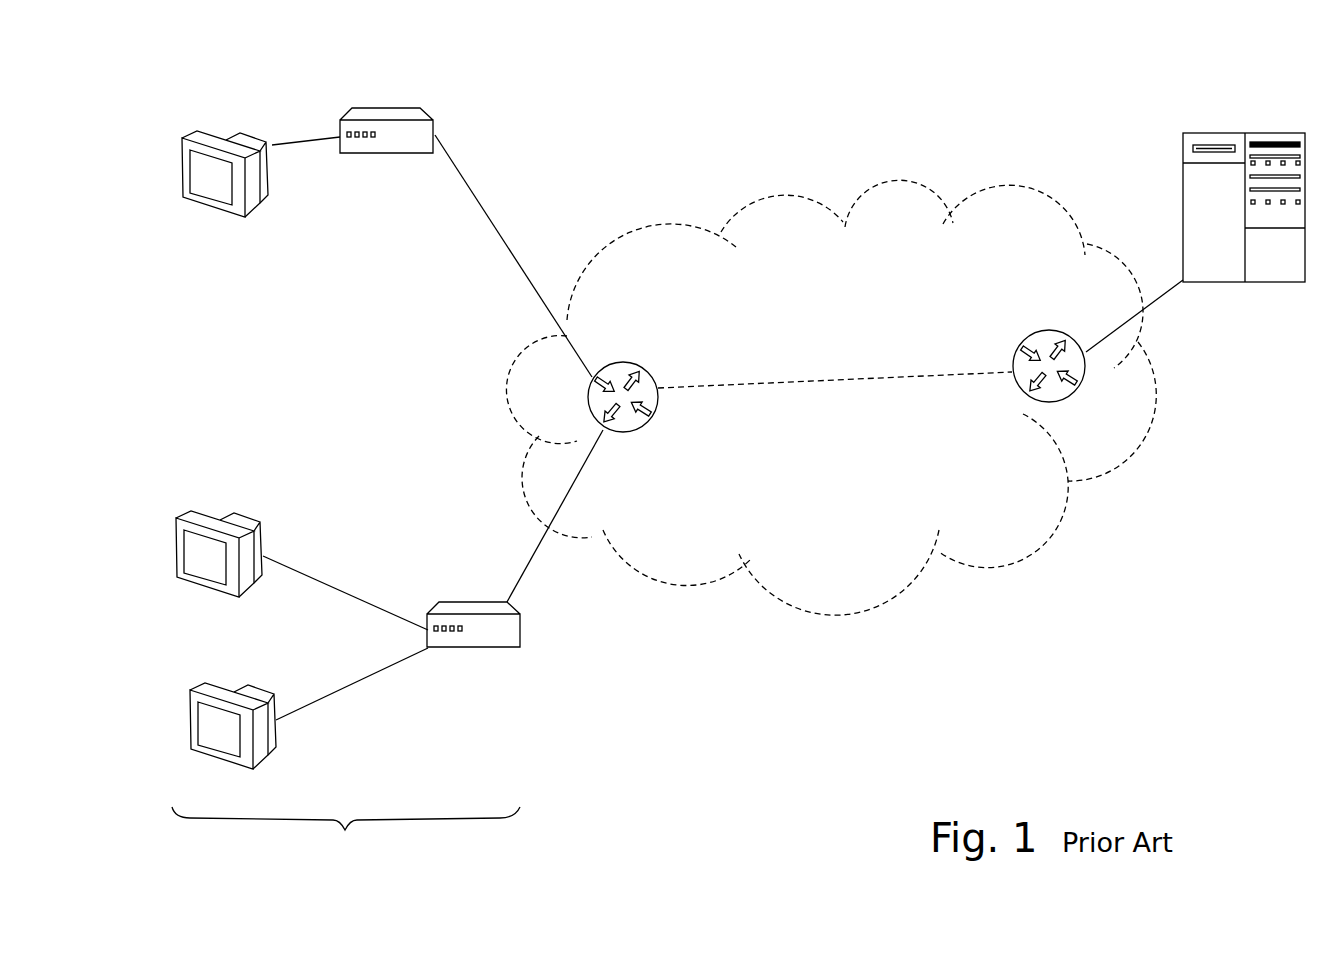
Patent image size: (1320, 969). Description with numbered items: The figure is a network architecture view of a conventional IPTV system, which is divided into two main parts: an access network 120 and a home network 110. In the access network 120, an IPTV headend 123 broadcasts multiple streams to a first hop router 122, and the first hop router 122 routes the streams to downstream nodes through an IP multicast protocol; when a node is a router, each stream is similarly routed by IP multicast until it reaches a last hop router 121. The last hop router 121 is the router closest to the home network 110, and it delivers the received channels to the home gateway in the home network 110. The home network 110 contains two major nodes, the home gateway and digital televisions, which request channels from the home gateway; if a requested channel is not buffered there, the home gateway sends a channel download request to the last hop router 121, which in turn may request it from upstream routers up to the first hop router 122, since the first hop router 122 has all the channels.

The home network 110 is at (346, 837).
The access network 120 is at (827, 614).
The last hop router 121 is at (615, 362).
The first hop router 122 is at (1040, 330).
The IPTV headend 123 is at (1183, 207).